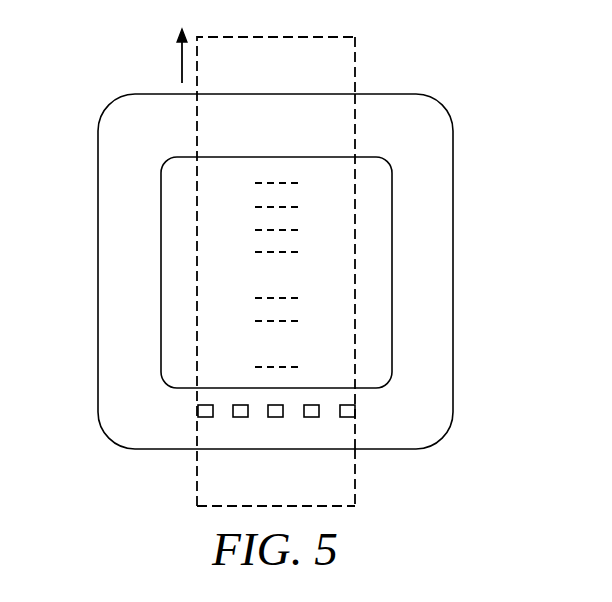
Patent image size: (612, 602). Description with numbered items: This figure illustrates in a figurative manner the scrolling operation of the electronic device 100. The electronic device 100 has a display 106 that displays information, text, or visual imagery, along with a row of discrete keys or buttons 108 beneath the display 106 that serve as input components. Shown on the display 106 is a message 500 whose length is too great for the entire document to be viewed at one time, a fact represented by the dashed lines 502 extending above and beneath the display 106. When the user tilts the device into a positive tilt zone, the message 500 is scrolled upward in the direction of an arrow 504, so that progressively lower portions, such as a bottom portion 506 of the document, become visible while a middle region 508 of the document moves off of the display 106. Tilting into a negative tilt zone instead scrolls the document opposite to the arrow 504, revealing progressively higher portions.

The electronic device 100 is at (471, 231).
The display 106 is at (393, 285).
The keys or buttons 108 is at (184, 411).
The message 500 is at (367, 82).
The dashed lines 502 is at (357, 46).
The arrow 504 is at (182, 64).
The bottom portion 506 is at (369, 478).
The middle region 508 is at (248, 275).